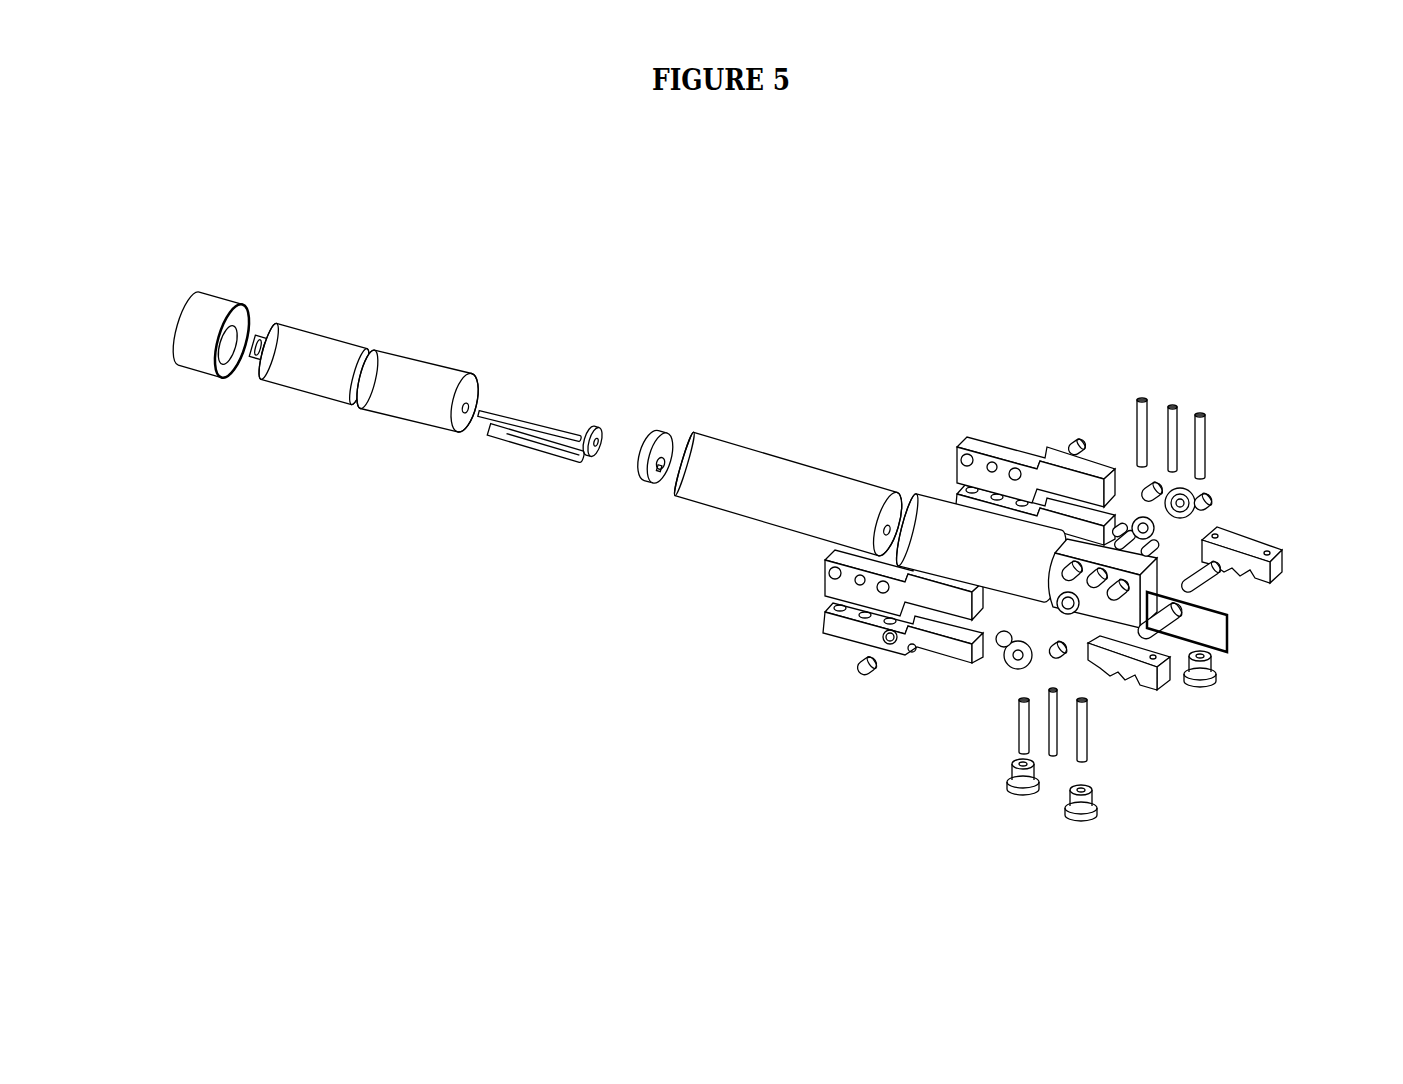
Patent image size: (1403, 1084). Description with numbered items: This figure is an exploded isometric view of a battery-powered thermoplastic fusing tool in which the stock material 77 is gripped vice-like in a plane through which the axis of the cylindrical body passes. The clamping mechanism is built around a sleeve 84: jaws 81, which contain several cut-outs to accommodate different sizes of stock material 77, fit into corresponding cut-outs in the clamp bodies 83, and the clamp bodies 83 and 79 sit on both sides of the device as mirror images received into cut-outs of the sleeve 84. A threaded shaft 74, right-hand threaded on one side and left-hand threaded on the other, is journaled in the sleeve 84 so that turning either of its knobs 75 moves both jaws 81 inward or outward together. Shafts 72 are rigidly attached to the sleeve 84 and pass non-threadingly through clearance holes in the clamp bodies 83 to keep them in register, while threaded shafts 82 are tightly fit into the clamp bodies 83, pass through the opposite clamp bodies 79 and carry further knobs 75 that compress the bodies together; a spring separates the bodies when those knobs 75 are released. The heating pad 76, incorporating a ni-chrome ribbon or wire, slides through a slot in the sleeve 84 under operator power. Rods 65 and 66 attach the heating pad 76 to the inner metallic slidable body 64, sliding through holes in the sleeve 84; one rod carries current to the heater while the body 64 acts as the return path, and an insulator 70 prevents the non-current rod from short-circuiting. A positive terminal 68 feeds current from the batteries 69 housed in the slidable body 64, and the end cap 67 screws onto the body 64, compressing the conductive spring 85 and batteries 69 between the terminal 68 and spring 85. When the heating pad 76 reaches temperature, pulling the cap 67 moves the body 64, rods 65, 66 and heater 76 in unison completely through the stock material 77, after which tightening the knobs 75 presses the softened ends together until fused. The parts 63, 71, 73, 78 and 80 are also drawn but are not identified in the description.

The clamp body block 63 is at (1290, 560).
The slidable body 64 is at (908, 490).
The rod 65 is at (487, 426).
The rod 66 is at (478, 407).
The end cap 67 is at (225, 327).
The positive terminal 68 is at (660, 430).
The batteries 69 is at (266, 336).
The insulator 70 is at (589, 434).
The washer 71 is at (1180, 490).
The shafts 72 is at (1168, 474).
The dowel pin 73 is at (1200, 512).
The threaded shaft 74 is at (1217, 490).
The knobs 75 is at (1233, 480).
The heating pad 76 is at (1233, 619).
The stock material 77 is at (1230, 580).
The pin 78 is at (1117, 475).
The clamp body 79 is at (967, 661).
The pin 80 is at (1078, 437).
The jaws 81 is at (1268, 582).
The threaded shafts 82 is at (1140, 453).
The clamp bodies 83 is at (967, 617).
The sleeve 84 is at (953, 488).
The conductive spring 85 is at (252, 332).